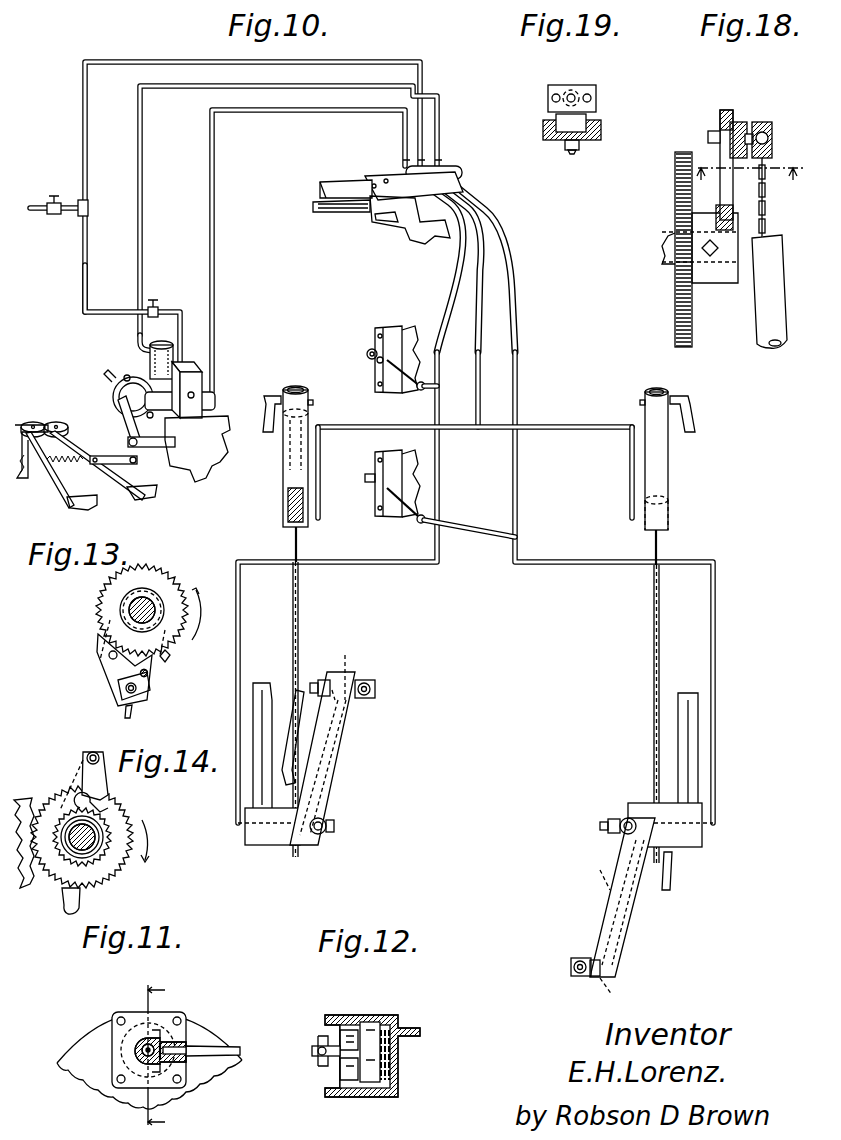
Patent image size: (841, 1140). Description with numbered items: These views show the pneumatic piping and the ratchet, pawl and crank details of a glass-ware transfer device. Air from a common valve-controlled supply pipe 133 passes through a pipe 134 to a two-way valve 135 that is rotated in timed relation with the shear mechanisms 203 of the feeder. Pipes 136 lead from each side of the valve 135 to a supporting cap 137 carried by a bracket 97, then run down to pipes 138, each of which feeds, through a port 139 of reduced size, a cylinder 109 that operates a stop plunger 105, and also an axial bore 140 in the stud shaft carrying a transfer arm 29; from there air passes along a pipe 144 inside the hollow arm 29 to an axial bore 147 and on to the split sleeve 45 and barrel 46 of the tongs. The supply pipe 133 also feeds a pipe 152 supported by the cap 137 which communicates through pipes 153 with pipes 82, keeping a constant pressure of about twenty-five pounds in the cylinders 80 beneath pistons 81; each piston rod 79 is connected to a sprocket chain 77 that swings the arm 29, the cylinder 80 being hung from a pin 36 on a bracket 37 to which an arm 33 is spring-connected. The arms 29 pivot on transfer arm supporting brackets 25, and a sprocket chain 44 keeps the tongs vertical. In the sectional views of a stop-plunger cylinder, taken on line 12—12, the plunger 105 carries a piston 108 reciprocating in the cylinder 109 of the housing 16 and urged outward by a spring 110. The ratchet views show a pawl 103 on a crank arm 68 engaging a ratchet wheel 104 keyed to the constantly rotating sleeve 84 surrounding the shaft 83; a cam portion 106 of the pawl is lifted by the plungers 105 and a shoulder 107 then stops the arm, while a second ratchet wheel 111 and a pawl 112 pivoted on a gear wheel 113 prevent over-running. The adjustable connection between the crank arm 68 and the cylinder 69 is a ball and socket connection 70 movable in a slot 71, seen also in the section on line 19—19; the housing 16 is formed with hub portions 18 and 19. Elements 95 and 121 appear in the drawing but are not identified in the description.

In FIG. 11, the section line 12— 12 is at (170, 1057).
In FIG. 11, the housing 16 is at (92, 1048).
In FIG. 12, the housing 16 is at (412, 1030).
In FIG. 10, the upper hub portion 18 is at (410, 225).
In FIG. 18, the lower hub portion 19 is at (747, 187).
In FIG. 10, the transfer arm supporting bracket 25 is at (268, 690).
In FIG. 10, the transfer arm 29 is at (344, 720).
In FIG. 10, the arm 33 is at (286, 752).
In FIG. 10, the pin 36 is at (313, 402).
In FIG. 10, the bracket 37 is at (262, 415).
In FIG. 10, the sprocket chain 44 is at (323, 800).
In FIG. 10, the split sleeve 45 is at (376, 694).
In FIG. 10, the barrel 46 is at (366, 680).
In FIG. 19, the crank arm 68 is at (598, 124).
In FIG. 18, the crank arm 68 is at (722, 116).
In FIG. 13, the crank arm 68 is at (118, 682).
In FIG. 14, the crank arm 68 is at (82, 762).
In FIG. 18, the cylinder 69 is at (762, 310).
In FIG. 14, the cylinder 69 is at (64, 905).
In FIG. 19, the ball and socket connection 70 is at (578, 88).
In FIG. 18, the ball and socket connection 70 is at (768, 126).
In FIG. 13, the ball and socket connection 70 is at (126, 690).
In FIG. 14, the ball and socket connection 70 is at (94, 752).
In FIG. 19, the slot 71 is at (580, 142).
In FIG. 18, the slot 71 is at (735, 175).
In FIG. 10, the sprocket chain 77 is at (299, 598).
In FIG. 10, the piston rod 79 is at (292, 496).
In FIG. 10, the fluid pressure cylinder 80 is at (285, 448).
In FIG. 10, the piston 81 is at (310, 413).
In FIG. 10, the pipe 82 is at (320, 490).
In FIG. 18, the shaft 83 is at (667, 238).
In FIG. 13, the shaft 83 is at (150, 600).
In FIG. 14, the shaft 83 is at (92, 832).
In FIG. 13, the sleeve 84 is at (160, 620).
In FIG. 14, the sleeve 84 is at (90, 850).
In FIG. 10, the lower housing 95 is at (343, 210).
In FIG. 10, the bracket 97 is at (338, 188).
In FIG. 13, the pawl 103 is at (98, 634).
In FIG. 13, the ratchet wheel 104 is at (118, 592).
In FIG. 10, the stop plunger 105 is at (367, 352).
In FIG. 13, the stop plunger 105 is at (150, 680).
In FIG. 11, the stop plunger 105 is at (146, 1044).
In FIG. 12, the stop plunger 105 is at (322, 1050).
In FIG. 13, the cam portion 106 is at (160, 658).
In FIG. 13, the shoulder 107 is at (146, 680).
In FIG. 12, the piston 108 is at (370, 1070).
In FIG. 10, the cylinder 109 is at (398, 333).
In FIG. 11, the cylinder 109 is at (112, 1025).
In FIG. 12, the cylinder 109 is at (358, 1025).
In FIG. 12, the spring 110 is at (392, 1055).
In FIG. 14, the ratchet wheel 111 is at (58, 858).
In FIG. 14, the pawl 112 is at (100, 808).
In FIG. 18, the gear wheel 113 is at (662, 262).
In FIG. 14, the gear wheel 113 is at (58, 800).
In FIG. 14, the plate 121 is at (26, 798).
In FIG. 10, the supply pipe 133 is at (36, 204).
In FIG. 10, the pipe 134 is at (83, 264).
In FIG. 10, the two-way valve 135 is at (200, 364).
In FIG. 10, the pipes 136 is at (212, 244).
In FIG. 10, the supporting cap 137 is at (385, 176).
In FIG. 10, the pipe 138 is at (400, 387).
In FIG. 11, the pipe 138 is at (228, 1045).
In FIG. 12, the pipe 138 is at (318, 1056).
In FIG. 11, the port 139 is at (184, 1078).
In FIG. 12, the port 139 is at (318, 1062).
In FIG. 10, the axial bore 140 is at (262, 838).
In FIG. 10, the pipe 144 is at (332, 735).
In FIG. 10, the axial bore 147 is at (484, 819).
In FIG. 10, the pipe 152 is at (136, 66).
In FIG. 10, the pipes 153 is at (566, 426).
In FIG. 10, the shear mechanisms 203 is at (85, 438).